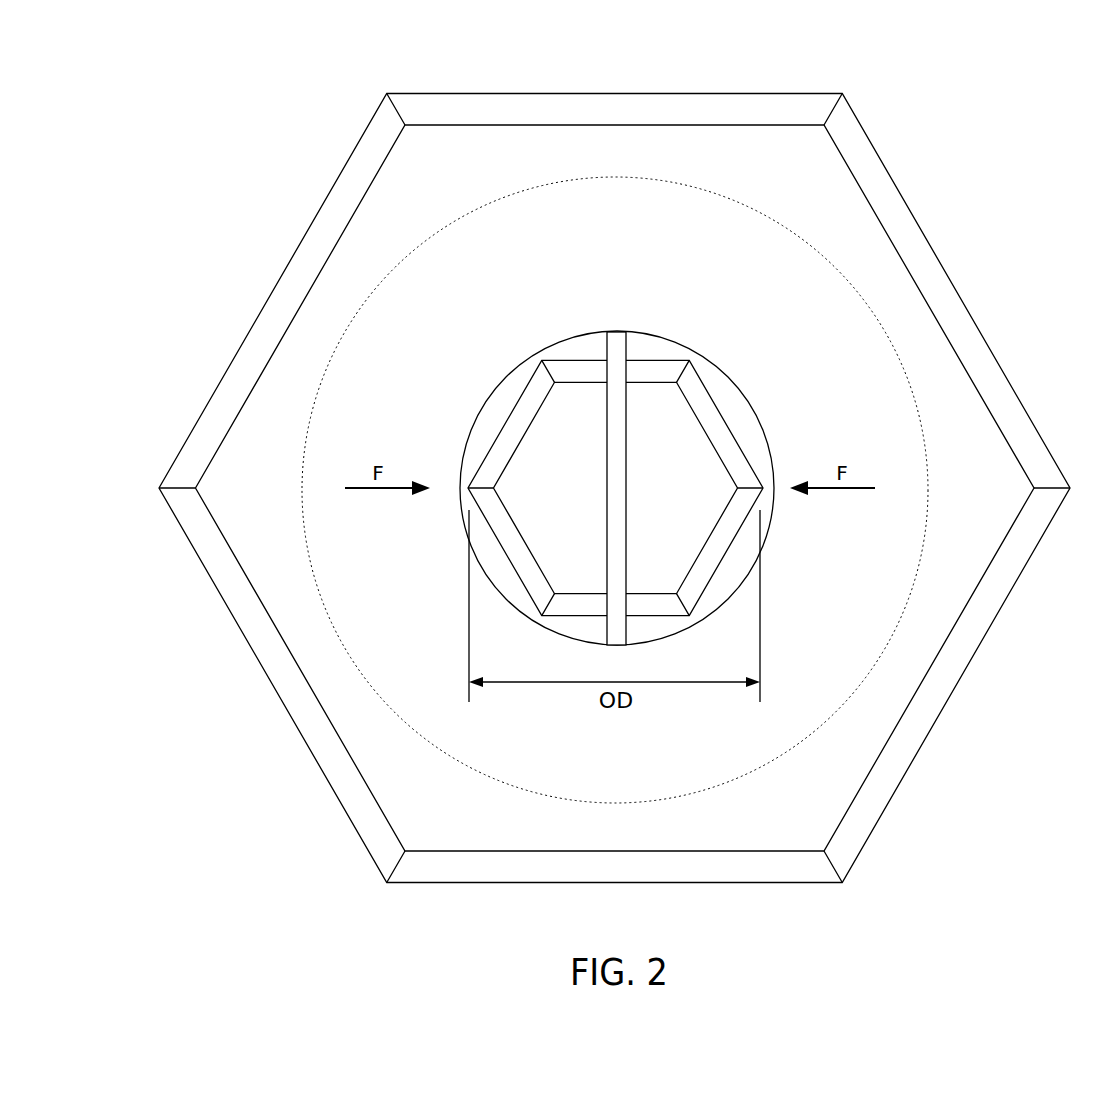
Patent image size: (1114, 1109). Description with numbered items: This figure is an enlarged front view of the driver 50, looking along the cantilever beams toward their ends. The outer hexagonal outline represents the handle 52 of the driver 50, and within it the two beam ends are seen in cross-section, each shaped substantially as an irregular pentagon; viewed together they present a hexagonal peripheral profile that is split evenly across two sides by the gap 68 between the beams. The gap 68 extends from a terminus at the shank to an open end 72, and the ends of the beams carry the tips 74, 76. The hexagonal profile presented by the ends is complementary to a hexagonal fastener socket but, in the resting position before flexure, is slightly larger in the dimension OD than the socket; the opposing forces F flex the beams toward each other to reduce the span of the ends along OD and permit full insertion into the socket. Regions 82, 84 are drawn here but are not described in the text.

The driver 50 is at (587, 474).
The handle 52 is at (986, 286).
The gap 68 is at (617, 462).
The open end 72 is at (616, 480).
The tip 74 is at (688, 485).
The tip 76 is at (543, 483).
The right hexagonal wall 82 is at (727, 485).
The left hexagonal wall 84 is at (517, 484).